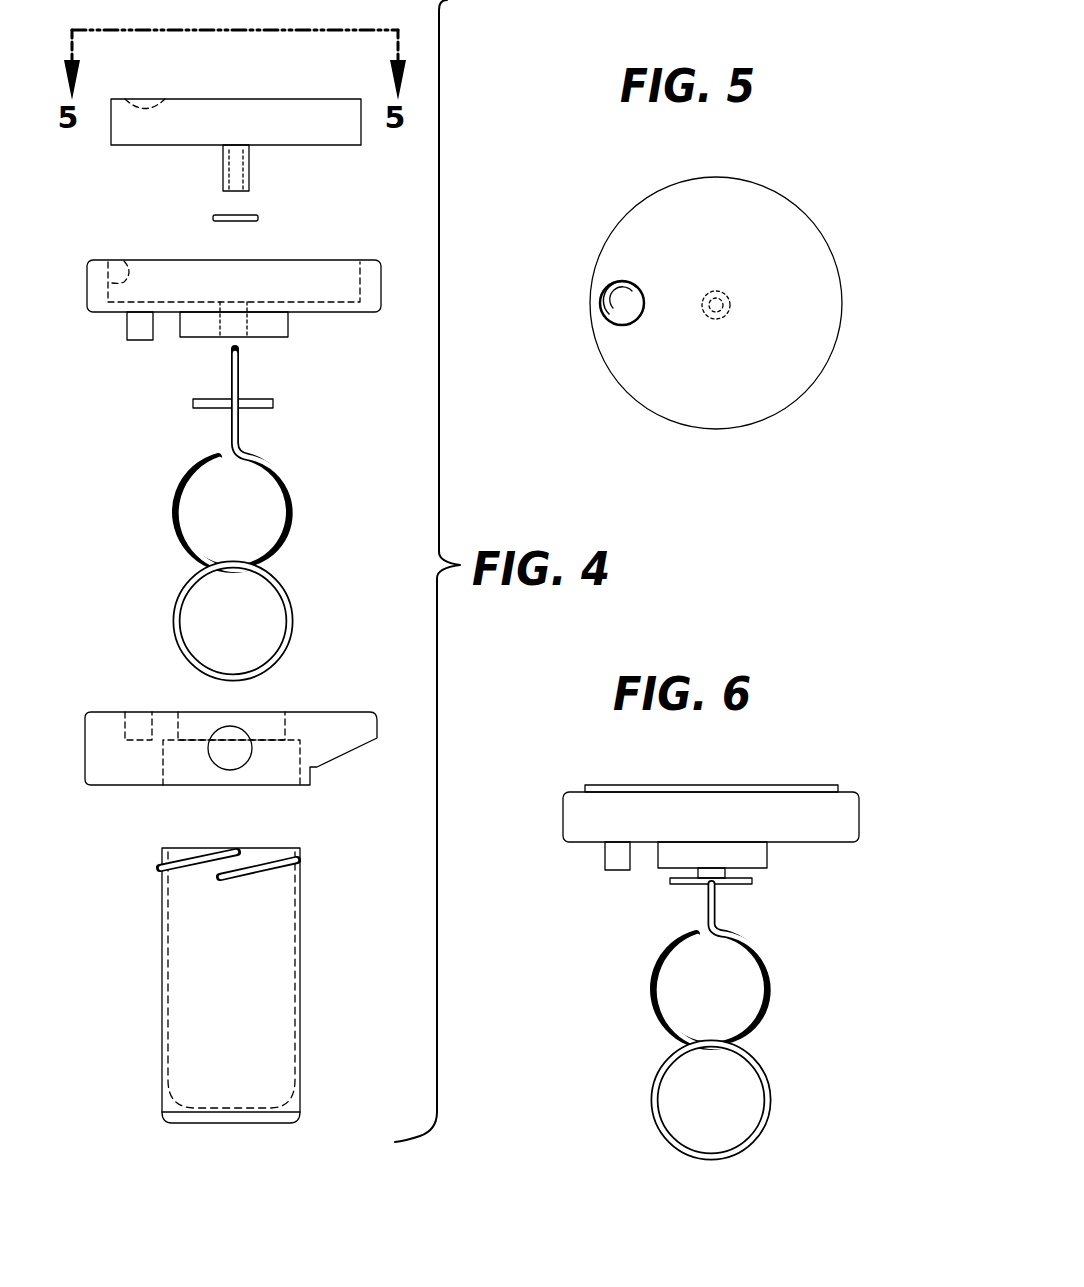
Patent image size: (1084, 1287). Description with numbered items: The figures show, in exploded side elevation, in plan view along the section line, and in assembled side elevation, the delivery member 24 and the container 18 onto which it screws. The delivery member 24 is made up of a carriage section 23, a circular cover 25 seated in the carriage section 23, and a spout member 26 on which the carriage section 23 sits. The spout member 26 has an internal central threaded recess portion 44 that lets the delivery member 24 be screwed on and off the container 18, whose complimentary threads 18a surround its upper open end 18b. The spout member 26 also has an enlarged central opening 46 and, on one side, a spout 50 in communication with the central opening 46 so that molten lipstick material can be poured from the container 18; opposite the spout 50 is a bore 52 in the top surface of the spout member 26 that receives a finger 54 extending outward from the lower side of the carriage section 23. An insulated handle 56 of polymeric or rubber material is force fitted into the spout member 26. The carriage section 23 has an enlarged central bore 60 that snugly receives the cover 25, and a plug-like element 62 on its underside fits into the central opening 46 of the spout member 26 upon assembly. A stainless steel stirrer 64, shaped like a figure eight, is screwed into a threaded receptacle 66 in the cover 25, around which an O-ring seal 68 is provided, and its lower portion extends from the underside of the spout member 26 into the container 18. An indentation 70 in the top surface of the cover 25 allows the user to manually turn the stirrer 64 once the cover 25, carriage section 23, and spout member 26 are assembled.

In FIG. 4, the container 18 is at (162, 940).
In FIG. 4, the complimentary threads 18a is at (305, 863).
In FIG. 4, the upper open end 18b is at (258, 855).
In FIG. 4, the carriage section 23 is at (381, 283).
In FIG. 6, the carriage section 23 is at (860, 820).
In FIG. 4, the delivery member 24 is at (130, 551).
In FIG. 4, the circular cover 25 is at (242, 101).
In FIG. 5, the circular cover 25 is at (793, 370).
In FIG. 6, the circular cover 25 is at (726, 785).
In FIG. 4, the spout member 26 is at (333, 716).
In FIG. 4, the internal central threaded recess portion 44 is at (170, 768).
In FIG. 4, the enlarged central opening 46 is at (192, 717).
In FIG. 4, the spout 50 is at (376, 727).
In FIG. 4, the bore 52 is at (137, 718).
In FIG. 4, the finger 54 is at (128, 322).
In FIG. 6, the finger 54 is at (600, 860).
In FIG. 4, the insulated handle 56 is at (243, 760).
In FIG. 4, the enlarged central bore 60 is at (128, 254).
In FIG. 5, the enlarged central bore 60 is at (716, 292).
In FIG. 4, the plug-like element 62 is at (281, 333).
In FIG. 6, the plug-like element 62 is at (760, 855).
In FIG. 4, the stirrer 64 is at (253, 457).
In FIG. 4, the threaded receptacle 66 is at (223, 163).
In FIG. 4, the O-ring seal 68 is at (216, 218).
In FIG. 4, the indentation 70 is at (148, 92).
In FIG. 5, the indentation 70 is at (632, 317).